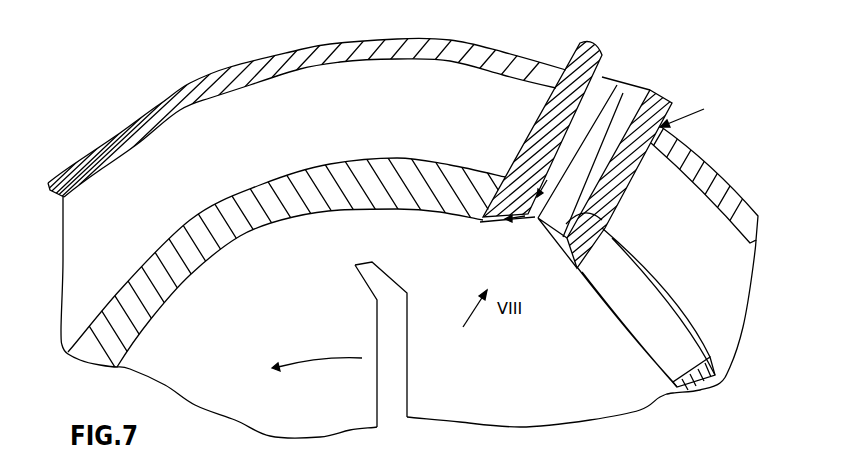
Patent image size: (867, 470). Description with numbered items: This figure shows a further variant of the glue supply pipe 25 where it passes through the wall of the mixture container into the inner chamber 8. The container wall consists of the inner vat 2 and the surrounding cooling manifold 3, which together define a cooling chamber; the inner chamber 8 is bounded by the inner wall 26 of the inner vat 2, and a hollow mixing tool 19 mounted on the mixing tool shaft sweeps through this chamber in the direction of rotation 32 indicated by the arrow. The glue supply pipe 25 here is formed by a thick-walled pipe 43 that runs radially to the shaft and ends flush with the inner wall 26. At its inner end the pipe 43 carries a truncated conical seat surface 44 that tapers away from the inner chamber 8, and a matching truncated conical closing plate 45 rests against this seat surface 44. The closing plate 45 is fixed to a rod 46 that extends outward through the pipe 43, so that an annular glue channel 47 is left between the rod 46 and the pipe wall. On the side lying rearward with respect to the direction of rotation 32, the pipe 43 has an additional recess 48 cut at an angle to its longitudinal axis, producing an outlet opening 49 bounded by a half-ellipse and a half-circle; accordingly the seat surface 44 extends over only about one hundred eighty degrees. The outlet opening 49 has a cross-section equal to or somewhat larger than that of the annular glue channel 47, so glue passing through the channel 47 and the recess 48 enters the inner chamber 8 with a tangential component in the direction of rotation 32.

The inner vat 2 is at (358, 161).
The cooling manifold 3 is at (704, 164).
The inner chamber 8 is at (178, 364).
The mixing tool 19 is at (405, 368).
The glue supply pipe 25 is at (697, 112).
The inner wall 26 is at (338, 214).
The direction of rotation 32 is at (313, 358).
The thick-walled pipe 43 is at (627, 180).
The truncated conical seat surface 44 is at (600, 221).
The truncated conical closing plate 45 is at (545, 241).
The rod 46 is at (623, 87).
The annular glue channel 47 is at (603, 78).
The recess 48 is at (490, 220).
The outlet opening 49 is at (497, 226).